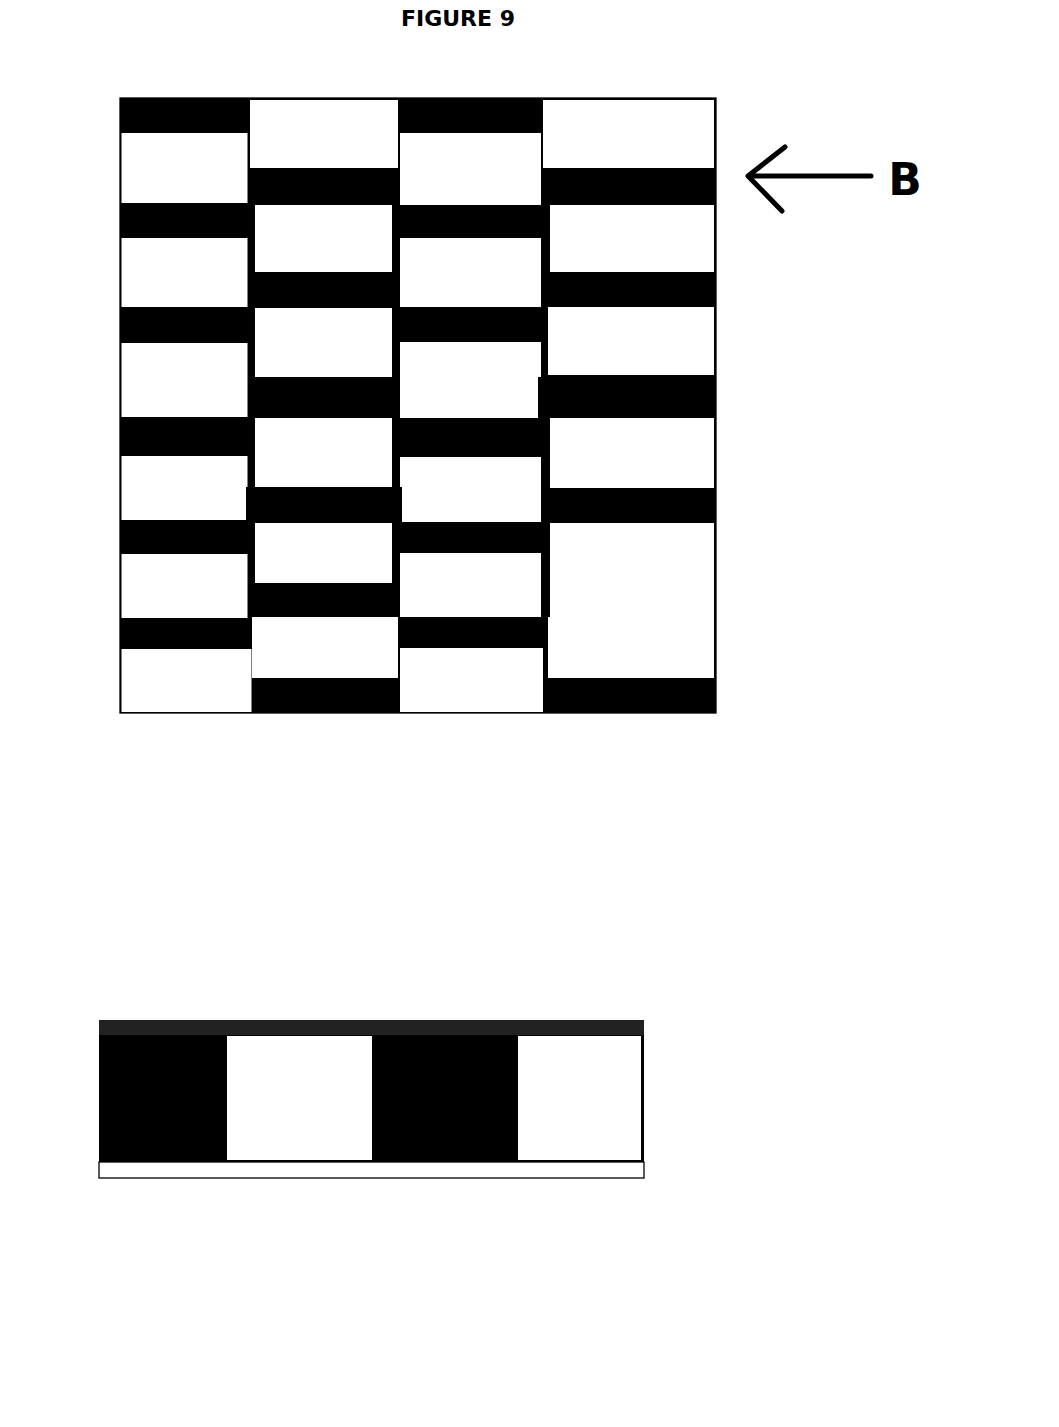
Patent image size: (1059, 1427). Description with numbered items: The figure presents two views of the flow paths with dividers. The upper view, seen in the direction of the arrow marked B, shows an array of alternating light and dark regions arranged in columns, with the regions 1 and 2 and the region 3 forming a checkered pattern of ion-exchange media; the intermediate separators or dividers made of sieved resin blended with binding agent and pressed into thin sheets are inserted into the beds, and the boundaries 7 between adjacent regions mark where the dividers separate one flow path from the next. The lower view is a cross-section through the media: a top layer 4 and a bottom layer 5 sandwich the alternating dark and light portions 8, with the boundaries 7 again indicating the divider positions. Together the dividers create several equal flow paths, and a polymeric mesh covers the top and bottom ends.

The light transmitting region 1 is at (647, 561).
The light shielding region 2 is at (559, 434).
The pixel opening 3 is at (231, 364).
The adhesive layer 4 is at (333, 1020).
The substrate 5 is at (433, 1172).
The boundary 7 is at (327, 537).
The transparent portion 8 is at (577, 1040).